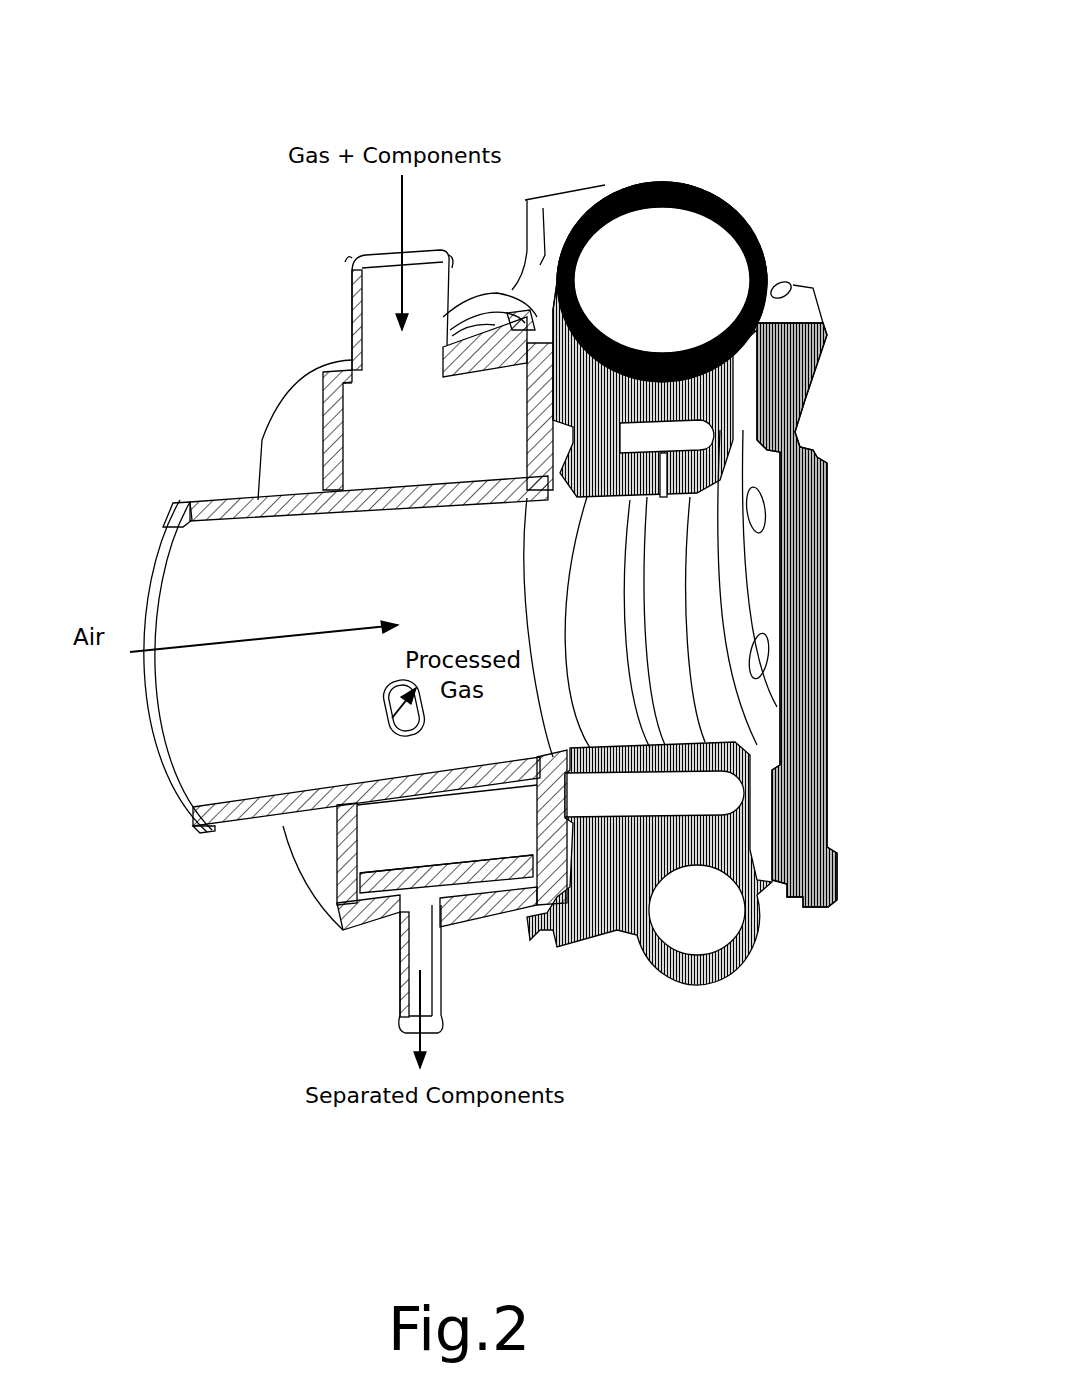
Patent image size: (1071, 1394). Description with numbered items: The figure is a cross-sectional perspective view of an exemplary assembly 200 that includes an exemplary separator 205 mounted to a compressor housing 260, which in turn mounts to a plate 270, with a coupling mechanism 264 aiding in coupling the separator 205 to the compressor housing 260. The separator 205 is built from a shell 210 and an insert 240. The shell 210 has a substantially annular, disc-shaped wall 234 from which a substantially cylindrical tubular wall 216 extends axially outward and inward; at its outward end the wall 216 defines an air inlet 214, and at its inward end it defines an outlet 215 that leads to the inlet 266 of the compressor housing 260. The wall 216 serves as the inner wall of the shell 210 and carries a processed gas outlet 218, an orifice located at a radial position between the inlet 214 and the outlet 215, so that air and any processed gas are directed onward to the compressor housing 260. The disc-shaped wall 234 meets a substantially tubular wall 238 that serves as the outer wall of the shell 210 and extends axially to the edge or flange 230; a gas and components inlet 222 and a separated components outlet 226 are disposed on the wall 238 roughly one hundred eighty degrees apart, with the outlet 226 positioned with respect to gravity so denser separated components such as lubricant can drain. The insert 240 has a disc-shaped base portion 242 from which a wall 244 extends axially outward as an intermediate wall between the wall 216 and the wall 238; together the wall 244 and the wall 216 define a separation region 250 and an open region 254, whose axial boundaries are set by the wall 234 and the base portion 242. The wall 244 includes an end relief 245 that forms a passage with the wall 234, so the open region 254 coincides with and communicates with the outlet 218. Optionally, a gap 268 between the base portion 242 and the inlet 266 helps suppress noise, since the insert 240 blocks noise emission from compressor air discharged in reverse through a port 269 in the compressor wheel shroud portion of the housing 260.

The assembly 200 is at (668, 45).
The separator 205 is at (192, 312).
The shell 210 is at (267, 413).
The air inlet 214 is at (158, 530).
The outlet 215 is at (522, 605).
The cylindrical wall 216 is at (365, 510).
The processed gas outlet 218 is at (380, 700).
The gas and components inlet 222 is at (360, 262).
The separated components outlet 226 is at (390, 1035).
The flange 230 is at (505, 367).
The disc-shaped wall 234 is at (337, 873).
The tubular wall 238 is at (363, 930).
The insert 240 is at (563, 797).
The base portion 242 is at (540, 467).
The wall 244 is at (460, 858).
The end relief 245 is at (368, 873).
The separation region 250 is at (425, 449).
The open region 254 is at (463, 829).
The compressor housing 260 is at (674, 525).
The coupling mechanism 264 is at (492, 293).
The inlet 266 is at (572, 740).
The gap 268 is at (560, 495).
The port 269 is at (660, 727).
The plate 270 is at (795, 410).